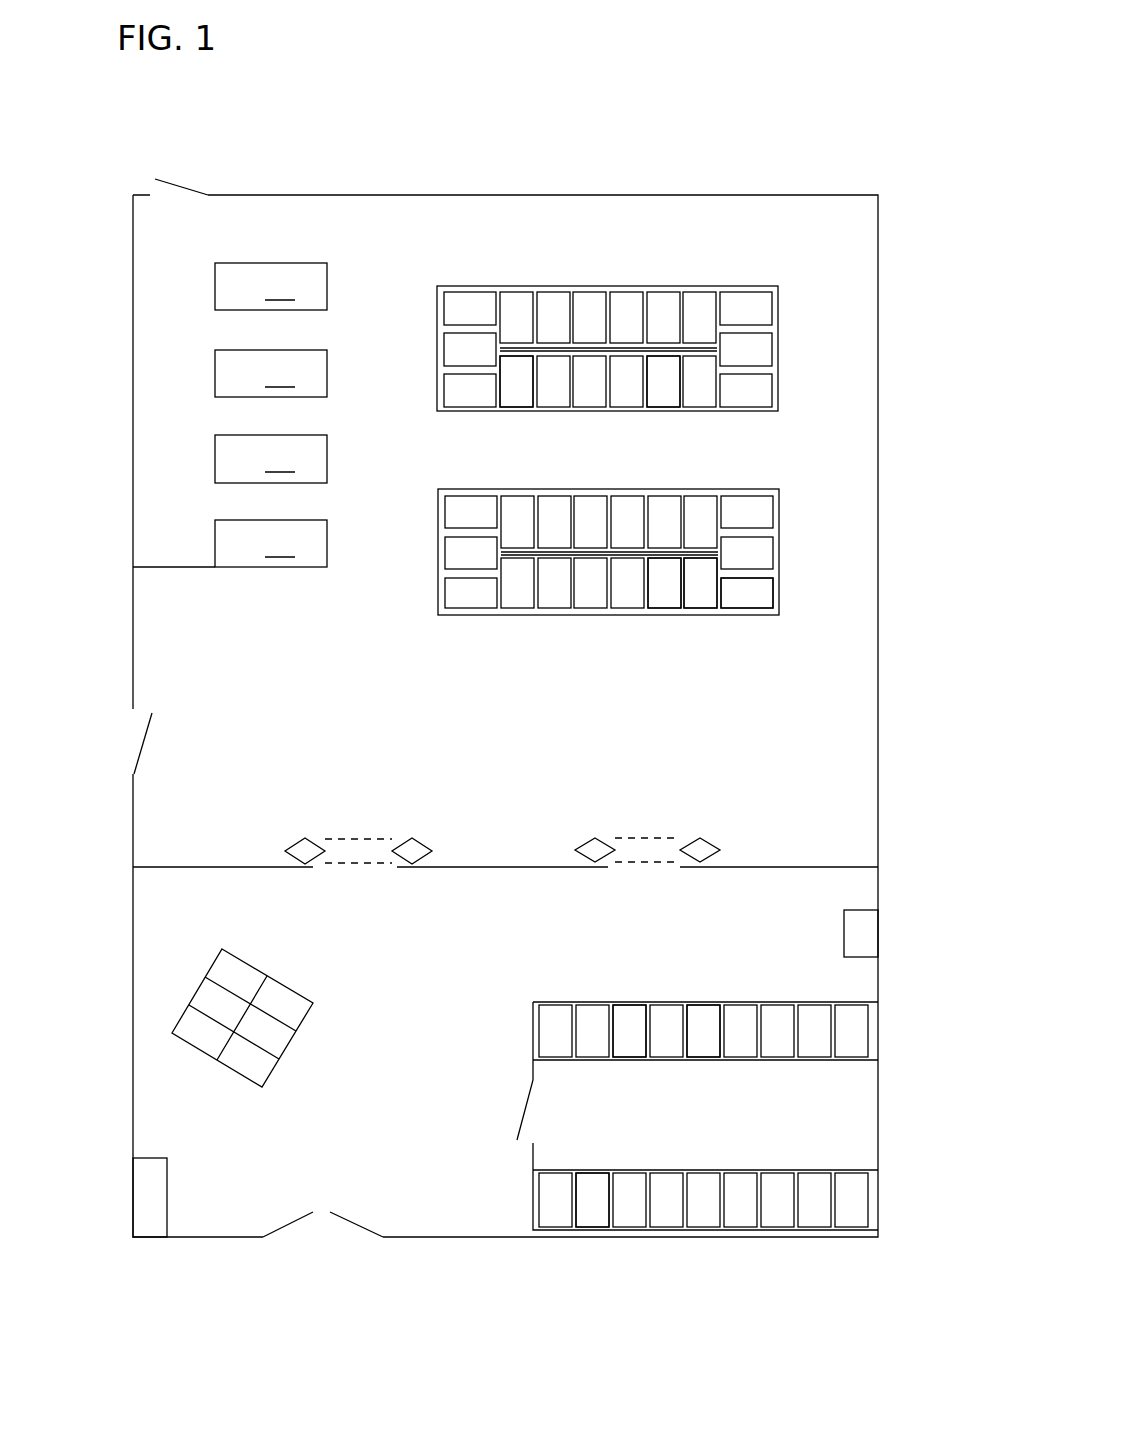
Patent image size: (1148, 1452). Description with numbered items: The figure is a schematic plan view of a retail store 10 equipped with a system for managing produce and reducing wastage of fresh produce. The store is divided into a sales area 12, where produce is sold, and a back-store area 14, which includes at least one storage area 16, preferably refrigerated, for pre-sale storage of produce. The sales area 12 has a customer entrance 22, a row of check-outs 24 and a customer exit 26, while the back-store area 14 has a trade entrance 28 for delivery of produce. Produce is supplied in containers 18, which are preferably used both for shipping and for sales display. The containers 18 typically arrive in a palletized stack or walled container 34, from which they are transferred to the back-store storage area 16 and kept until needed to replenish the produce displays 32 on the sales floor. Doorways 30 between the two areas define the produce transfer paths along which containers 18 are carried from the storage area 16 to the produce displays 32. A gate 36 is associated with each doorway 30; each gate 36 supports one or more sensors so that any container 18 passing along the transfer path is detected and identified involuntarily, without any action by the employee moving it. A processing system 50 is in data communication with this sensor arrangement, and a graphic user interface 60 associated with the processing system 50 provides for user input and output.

The retail store 10 is at (740, 112).
The sales area 12 is at (557, 721).
The back-store area 14 is at (532, 955).
The storage area 16 is at (730, 1144).
The containers 18 is at (521, 396).
The customer entrance 22 is at (125, 737).
The check-outs 24 is at (230, 415).
The customer exit 26 is at (198, 170).
The trade entrance 28 is at (319, 1248).
The doorways 30 is at (350, 880).
The produce displays 32 is at (762, 274).
The palletized stack or walled container 34 is at (236, 1092).
The gate 36 is at (300, 845).
The processing system 50 is at (150, 1196).
The graphic user interface 60 is at (862, 938).